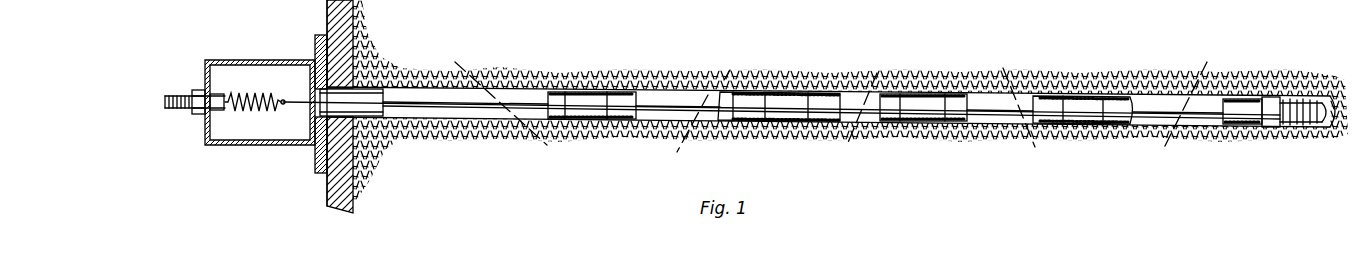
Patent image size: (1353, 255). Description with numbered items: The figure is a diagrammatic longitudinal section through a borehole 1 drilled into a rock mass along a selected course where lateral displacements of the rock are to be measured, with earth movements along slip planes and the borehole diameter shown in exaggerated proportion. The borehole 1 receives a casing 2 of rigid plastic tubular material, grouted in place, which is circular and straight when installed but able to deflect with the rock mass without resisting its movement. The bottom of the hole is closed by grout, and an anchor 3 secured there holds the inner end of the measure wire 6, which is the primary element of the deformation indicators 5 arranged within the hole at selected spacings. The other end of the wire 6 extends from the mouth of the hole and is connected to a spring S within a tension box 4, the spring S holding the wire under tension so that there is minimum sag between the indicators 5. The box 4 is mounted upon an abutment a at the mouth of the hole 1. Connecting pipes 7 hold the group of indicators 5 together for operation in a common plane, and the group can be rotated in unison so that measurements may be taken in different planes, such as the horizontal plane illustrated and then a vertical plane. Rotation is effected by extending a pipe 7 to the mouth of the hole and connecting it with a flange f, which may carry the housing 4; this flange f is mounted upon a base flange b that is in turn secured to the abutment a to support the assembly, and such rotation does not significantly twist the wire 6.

The borehole 1 is at (405, 74).
The casing 2 is at (462, 72).
The anchor 3 is at (1300, 96).
The tension box 4 is at (206, 61).
The deformation indicator 5 is at (582, 94).
The measure wire 6 is at (667, 108).
The connecting pipe 7 is at (357, 112).
The abutment a is at (350, 24).
The base flange b is at (327, 25).
The flange f is at (315, 50).
The spring S is at (243, 110).